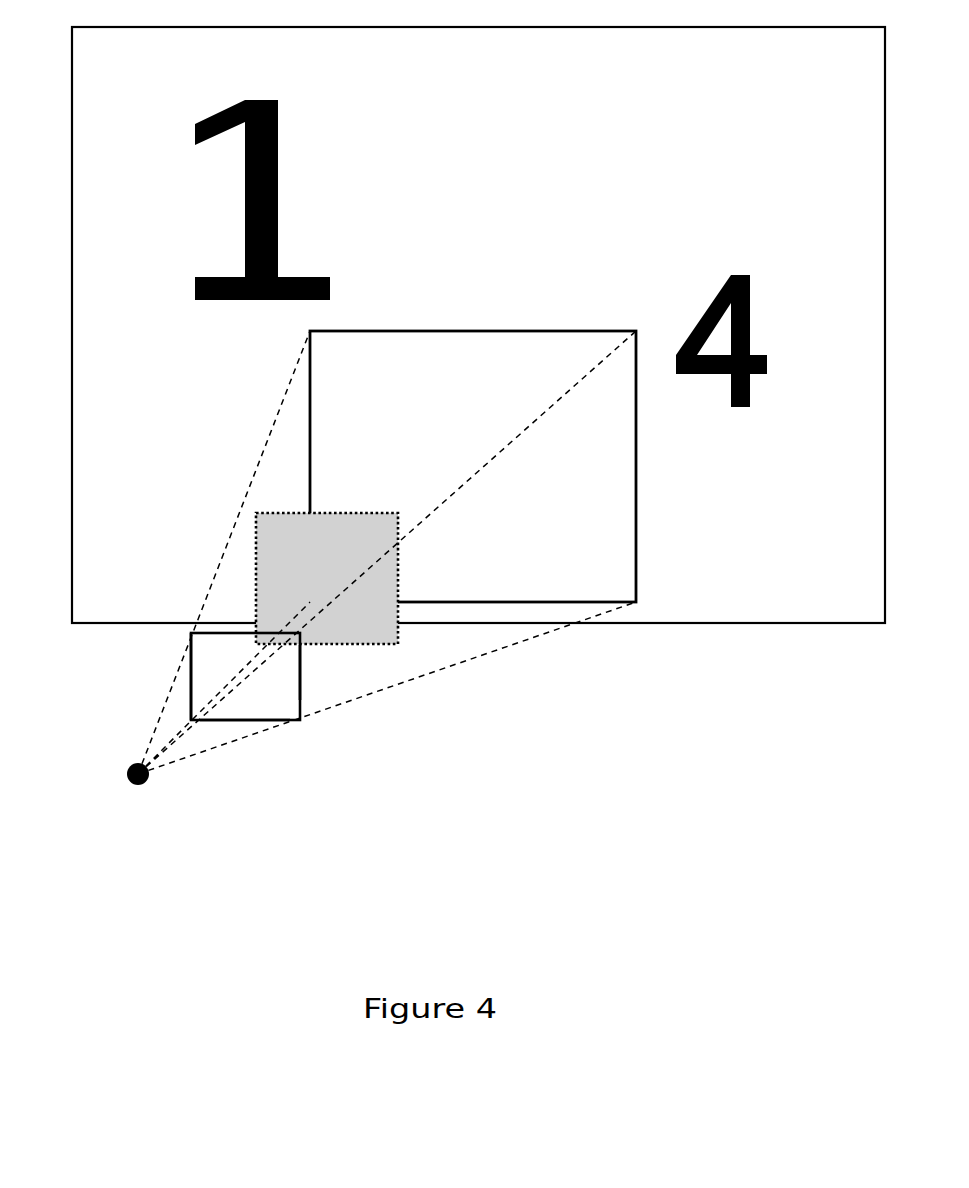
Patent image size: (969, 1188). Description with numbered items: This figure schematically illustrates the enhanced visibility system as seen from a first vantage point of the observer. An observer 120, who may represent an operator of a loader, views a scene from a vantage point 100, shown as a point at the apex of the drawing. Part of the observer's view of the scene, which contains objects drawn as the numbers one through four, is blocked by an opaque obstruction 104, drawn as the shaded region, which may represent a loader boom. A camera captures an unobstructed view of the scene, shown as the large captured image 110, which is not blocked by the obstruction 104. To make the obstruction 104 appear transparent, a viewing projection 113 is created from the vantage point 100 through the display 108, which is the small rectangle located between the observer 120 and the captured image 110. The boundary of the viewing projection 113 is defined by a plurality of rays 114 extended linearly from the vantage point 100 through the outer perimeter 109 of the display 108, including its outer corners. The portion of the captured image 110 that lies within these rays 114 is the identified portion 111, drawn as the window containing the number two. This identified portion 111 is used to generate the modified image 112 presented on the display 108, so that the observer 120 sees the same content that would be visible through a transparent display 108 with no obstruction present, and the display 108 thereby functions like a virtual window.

The vantage point 100 is at (141, 786).
The opaque obstruction 104 is at (380, 610).
The display 108 is at (233, 728).
The outer perimeter 109 is at (300, 682).
The captured image 110 is at (800, 593).
The identified portion 111 is at (636, 543).
The modified image 112 is at (290, 708).
The viewing projection 113 is at (541, 655).
The rays 114 is at (187, 647).
The observer 120 is at (100, 796).